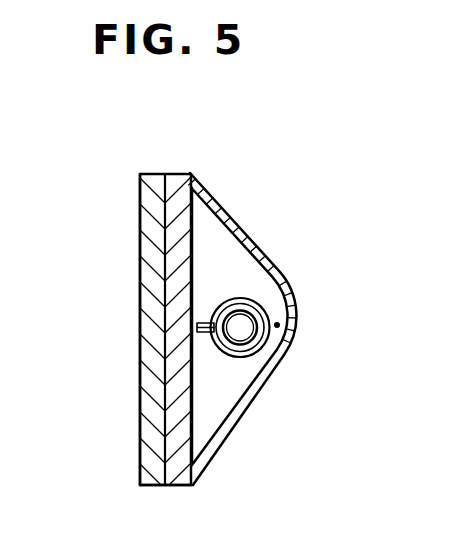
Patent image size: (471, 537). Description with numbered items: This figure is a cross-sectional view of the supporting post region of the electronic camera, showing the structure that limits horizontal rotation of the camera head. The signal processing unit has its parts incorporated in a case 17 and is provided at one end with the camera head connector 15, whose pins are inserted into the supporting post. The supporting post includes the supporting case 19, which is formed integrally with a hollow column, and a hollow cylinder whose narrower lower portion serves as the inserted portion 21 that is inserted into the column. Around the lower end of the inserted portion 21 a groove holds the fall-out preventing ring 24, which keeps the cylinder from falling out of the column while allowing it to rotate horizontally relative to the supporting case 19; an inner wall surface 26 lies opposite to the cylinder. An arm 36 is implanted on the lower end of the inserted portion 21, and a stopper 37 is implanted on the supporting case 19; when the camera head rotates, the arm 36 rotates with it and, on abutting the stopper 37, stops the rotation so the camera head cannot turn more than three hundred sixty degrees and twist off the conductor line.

The camera head connector 15 is at (165, 174).
The case 17 is at (151, 178).
The supporting case 19 is at (211, 196).
The inserted portion 21 is at (243, 296).
The fall-out preventing ring 24 is at (268, 296).
The inner wall surface 26 is at (240, 328).
The arm 36 is at (208, 322).
The stopper 37 is at (277, 325).